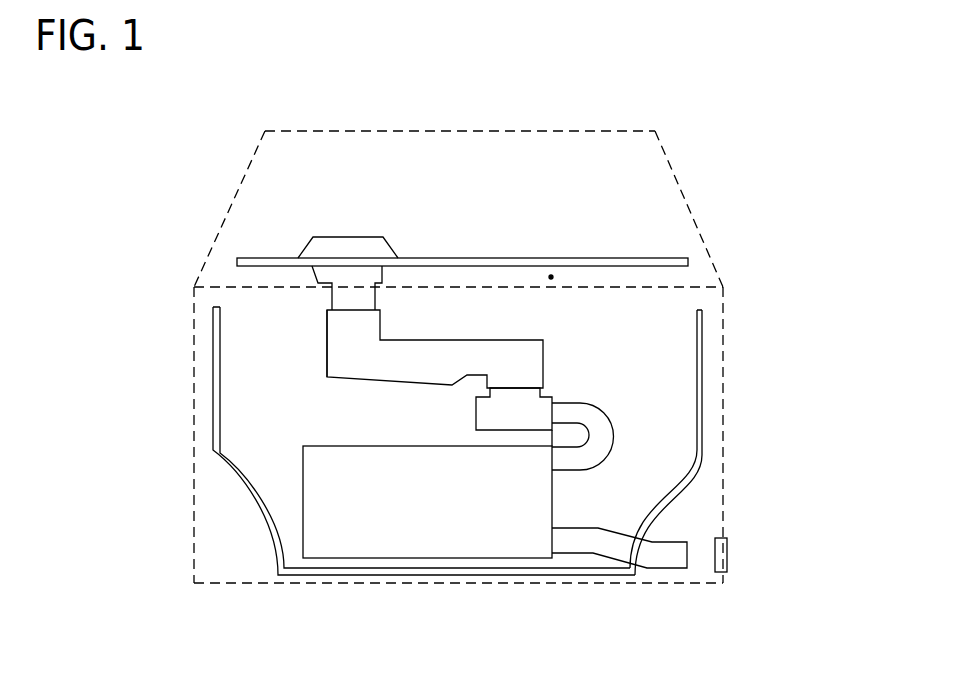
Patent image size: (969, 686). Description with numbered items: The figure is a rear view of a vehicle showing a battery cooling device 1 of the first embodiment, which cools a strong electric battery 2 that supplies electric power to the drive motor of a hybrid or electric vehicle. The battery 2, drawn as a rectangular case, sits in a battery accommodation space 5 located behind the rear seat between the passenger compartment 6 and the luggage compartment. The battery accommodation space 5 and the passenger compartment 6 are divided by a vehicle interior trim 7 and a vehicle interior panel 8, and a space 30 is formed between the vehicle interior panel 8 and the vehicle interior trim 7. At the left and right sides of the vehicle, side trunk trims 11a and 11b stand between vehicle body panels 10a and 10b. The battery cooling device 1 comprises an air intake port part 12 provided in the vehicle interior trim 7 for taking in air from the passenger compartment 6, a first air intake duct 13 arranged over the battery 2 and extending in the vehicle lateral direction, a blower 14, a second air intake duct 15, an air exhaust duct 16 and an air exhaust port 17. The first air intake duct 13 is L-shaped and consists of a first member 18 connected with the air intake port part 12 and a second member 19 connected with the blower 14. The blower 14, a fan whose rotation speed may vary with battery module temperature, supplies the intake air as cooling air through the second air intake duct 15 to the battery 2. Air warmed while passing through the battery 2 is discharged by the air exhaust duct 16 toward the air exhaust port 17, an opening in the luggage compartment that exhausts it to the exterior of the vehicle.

The battery cooling device 1 is at (440, 366).
The battery 2 is at (365, 446).
The battery accommodation space 5 is at (261, 343).
The passenger compartment 6 is at (474, 207).
The vehicle interior trim 7 is at (672, 258).
The vehicle interior panel 8 is at (688, 289).
The vehicle body panel 10a is at (193, 419).
The vehicle body panel 10b is at (723, 433).
The side trunk trim 11a is at (213, 355).
The side trunk trim 11b is at (702, 375).
The air intake port part 12 is at (352, 236).
The first air intake duct 13 is at (497, 333).
The blower 14 is at (476, 411).
The second air intake duct 15 is at (593, 403).
The air exhaust duct 16 is at (667, 570).
The air exhaust port 17 is at (728, 556).
The first member 18 is at (375, 300).
The second member 19 is at (327, 355).
The space 30 is at (551, 276).